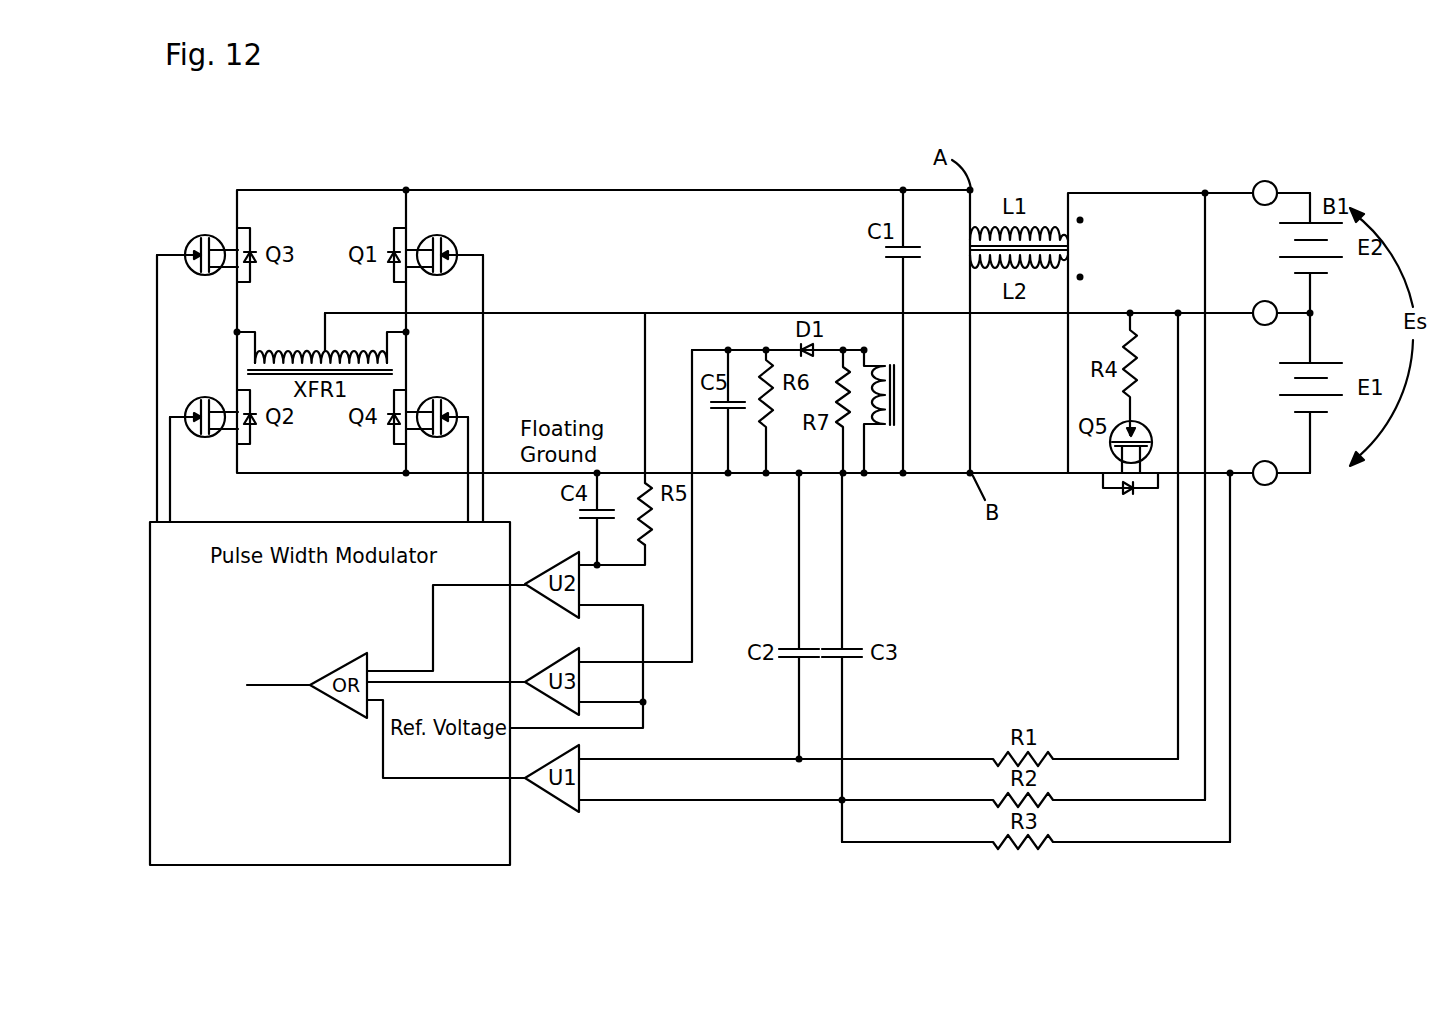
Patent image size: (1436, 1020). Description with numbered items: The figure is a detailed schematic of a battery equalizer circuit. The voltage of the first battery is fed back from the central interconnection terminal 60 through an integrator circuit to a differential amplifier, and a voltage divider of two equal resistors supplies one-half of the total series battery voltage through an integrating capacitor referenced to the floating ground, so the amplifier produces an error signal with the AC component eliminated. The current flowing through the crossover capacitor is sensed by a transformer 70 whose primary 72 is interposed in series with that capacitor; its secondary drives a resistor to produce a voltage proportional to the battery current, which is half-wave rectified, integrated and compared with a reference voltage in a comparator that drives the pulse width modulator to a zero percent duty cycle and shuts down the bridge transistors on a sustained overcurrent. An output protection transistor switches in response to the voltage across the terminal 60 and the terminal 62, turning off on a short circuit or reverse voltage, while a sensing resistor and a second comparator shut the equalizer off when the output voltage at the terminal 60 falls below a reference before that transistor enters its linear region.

The central interconnection terminal 60 is at (1259, 324).
The terminal 62 is at (1273, 485).
The transformer 70 is at (880, 364).
The primary 72 is at (905, 437).